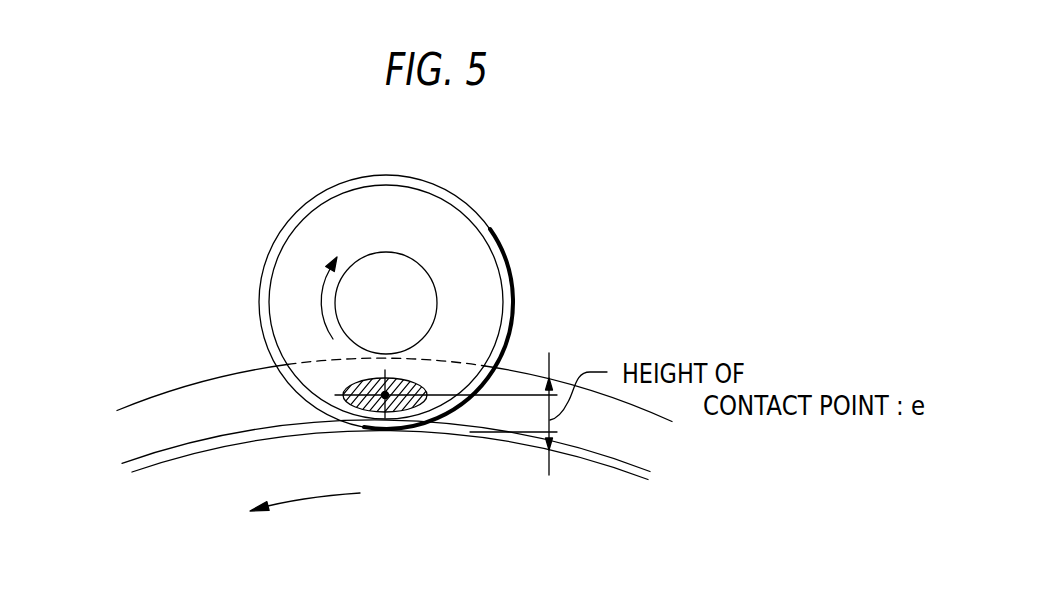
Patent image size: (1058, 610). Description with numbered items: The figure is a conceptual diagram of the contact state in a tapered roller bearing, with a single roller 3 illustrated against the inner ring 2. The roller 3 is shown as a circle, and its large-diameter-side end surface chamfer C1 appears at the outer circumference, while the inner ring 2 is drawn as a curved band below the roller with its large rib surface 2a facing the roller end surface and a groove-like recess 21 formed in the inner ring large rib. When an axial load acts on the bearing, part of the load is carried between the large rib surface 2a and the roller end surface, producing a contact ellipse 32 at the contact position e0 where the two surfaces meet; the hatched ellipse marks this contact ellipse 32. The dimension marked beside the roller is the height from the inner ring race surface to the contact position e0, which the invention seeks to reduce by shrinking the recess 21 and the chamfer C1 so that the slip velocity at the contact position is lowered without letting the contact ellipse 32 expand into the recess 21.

The inner ring 2 is at (425, 450).
The large rib surface 2a is at (648, 458).
The groove-like recess 21 is at (573, 453).
The roller 3 is at (403, 286).
The contact ellipse 32 is at (436, 385).
The large-diameter-side end surface chamfer C1 is at (447, 193).
The contact position e0 is at (388, 397).